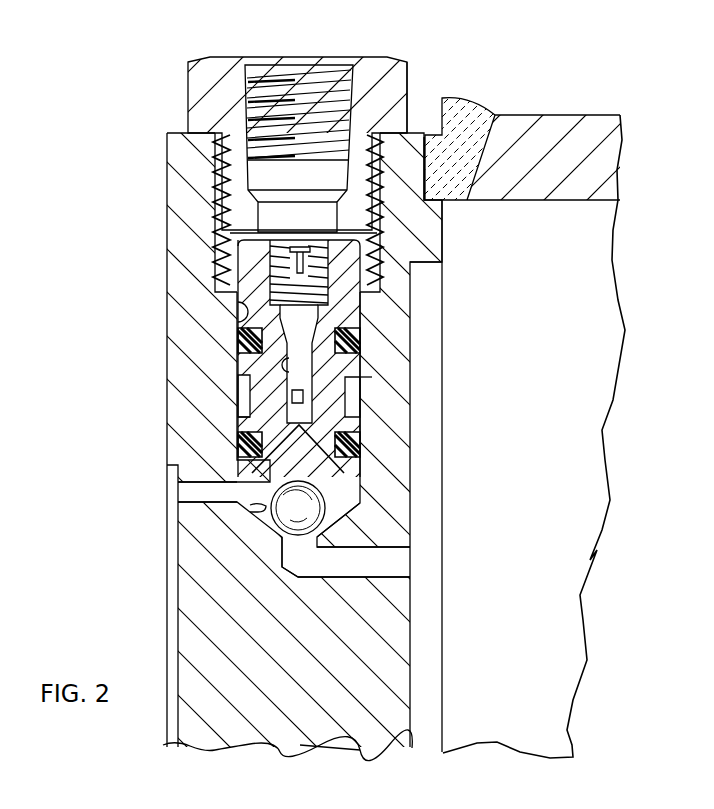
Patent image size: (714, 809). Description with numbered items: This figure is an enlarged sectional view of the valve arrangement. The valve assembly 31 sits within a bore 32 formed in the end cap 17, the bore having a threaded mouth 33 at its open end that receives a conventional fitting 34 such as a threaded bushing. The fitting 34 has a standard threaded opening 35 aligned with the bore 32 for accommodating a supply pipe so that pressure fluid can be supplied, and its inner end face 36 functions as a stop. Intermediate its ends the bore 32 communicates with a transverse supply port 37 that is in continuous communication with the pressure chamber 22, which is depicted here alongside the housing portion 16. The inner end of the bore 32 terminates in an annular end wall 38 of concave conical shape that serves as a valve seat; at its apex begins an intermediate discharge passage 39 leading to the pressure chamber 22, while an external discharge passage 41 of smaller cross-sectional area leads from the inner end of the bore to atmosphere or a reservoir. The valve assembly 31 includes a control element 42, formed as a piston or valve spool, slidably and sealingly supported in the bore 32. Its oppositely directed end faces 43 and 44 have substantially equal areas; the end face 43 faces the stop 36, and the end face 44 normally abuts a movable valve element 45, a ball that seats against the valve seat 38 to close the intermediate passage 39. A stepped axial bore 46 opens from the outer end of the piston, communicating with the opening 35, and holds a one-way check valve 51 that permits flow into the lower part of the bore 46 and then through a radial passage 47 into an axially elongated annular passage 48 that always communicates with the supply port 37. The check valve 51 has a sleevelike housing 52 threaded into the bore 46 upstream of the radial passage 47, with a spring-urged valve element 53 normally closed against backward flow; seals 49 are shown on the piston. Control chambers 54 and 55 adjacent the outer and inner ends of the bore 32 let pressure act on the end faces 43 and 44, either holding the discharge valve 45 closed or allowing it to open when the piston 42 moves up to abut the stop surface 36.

The housing block 16 is at (568, 127).
The end cap 17 is at (320, 733).
The pressure chamber 22 is at (588, 466).
The valve assembly 31 is at (222, 360).
The bore 32 is at (237, 316).
The threaded mouth 33 is at (228, 198).
The fitting 34 is at (212, 73).
The threaded opening 35 is at (265, 63).
The inner end face 36 is at (237, 240).
The transverse supply port 37 is at (360, 376).
The annular end wall 38 is at (277, 520).
The intermediate discharge passage 39 is at (385, 562).
The external discharge passage 41 is at (200, 492).
The control element 42 is at (240, 273).
The end face 43 is at (265, 233).
The end face 44 is at (362, 498).
The movable valve element 45 is at (262, 527).
The bore 46 is at (245, 390).
The radial passage 47 is at (352, 392).
The annular passage 48 is at (240, 410).
The O-ring seals 49 is at (352, 340).
The one-way check valve 51 is at (326, 234).
The sleevelike housing 52 is at (366, 312).
The valve element 53 is at (297, 246).
The control chamber 54 is at (243, 250).
The control chamber 55 is at (292, 510).